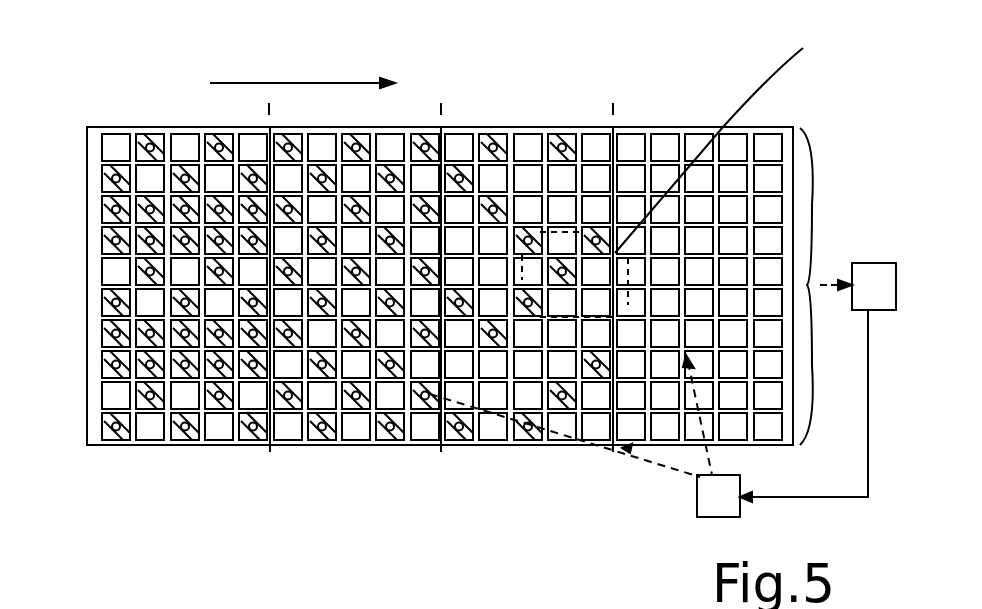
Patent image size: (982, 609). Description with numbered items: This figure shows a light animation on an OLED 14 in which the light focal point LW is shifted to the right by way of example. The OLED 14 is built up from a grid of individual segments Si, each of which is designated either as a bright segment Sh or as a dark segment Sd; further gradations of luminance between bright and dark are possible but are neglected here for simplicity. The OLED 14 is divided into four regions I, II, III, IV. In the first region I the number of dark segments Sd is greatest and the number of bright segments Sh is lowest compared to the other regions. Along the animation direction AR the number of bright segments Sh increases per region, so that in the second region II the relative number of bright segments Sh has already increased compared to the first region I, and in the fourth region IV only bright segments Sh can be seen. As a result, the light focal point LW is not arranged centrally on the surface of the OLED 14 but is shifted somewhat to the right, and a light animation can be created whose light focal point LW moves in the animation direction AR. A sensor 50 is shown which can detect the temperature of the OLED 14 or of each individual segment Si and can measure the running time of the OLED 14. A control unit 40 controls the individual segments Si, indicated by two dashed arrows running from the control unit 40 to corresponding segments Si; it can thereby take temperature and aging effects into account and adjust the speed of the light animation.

The OLED 14 is at (573, 100).
The first region I is at (163, 127).
The second region II is at (392, 127).
The third region III is at (525, 127).
The fourth region IV is at (680, 127).
The animation direction AR is at (326, 83).
The light focal point LW is at (690, 170).
The segment Si is at (100, 175).
The dark segment Sd is at (113, 432).
The bright segment Sh is at (134, 430).
The sensor 50 is at (886, 312).
The control unit 40 is at (697, 505).